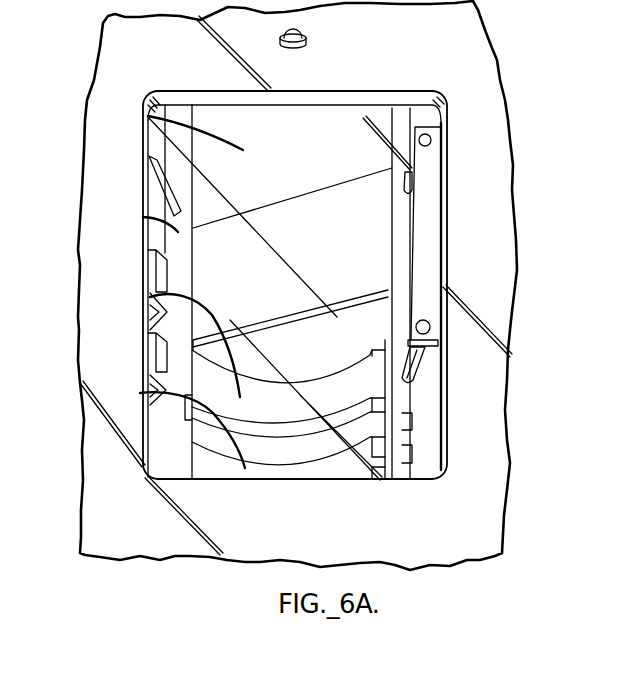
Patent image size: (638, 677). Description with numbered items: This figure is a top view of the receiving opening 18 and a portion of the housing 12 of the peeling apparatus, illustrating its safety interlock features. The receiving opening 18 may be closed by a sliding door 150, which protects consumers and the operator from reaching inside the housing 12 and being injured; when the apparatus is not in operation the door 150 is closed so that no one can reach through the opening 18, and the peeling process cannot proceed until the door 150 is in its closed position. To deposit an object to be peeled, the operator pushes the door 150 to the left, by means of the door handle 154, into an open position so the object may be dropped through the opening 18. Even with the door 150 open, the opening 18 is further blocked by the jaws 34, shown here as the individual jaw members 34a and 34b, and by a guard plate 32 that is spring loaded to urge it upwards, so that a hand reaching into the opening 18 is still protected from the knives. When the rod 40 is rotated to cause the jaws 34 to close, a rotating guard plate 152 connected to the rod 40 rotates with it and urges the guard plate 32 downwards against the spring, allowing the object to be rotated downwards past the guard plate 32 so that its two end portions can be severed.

The housing 12 is at (487, 122).
The receiving opening 18 is at (330, 125).
The guard plate 32 is at (295, 210).
The rod 40 is at (143, 218).
The sliding door 150 is at (148, 118).
The rotating guard plate 152 is at (161, 160).
The door handle 154 is at (428, 243).
The jaws 34 is at (79, 263).
The lug 34a is at (155, 277).
The lug 34b is at (153, 296).